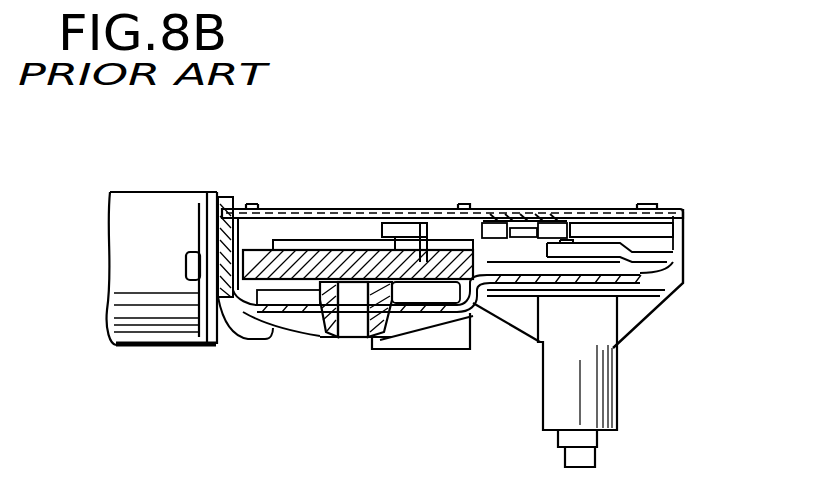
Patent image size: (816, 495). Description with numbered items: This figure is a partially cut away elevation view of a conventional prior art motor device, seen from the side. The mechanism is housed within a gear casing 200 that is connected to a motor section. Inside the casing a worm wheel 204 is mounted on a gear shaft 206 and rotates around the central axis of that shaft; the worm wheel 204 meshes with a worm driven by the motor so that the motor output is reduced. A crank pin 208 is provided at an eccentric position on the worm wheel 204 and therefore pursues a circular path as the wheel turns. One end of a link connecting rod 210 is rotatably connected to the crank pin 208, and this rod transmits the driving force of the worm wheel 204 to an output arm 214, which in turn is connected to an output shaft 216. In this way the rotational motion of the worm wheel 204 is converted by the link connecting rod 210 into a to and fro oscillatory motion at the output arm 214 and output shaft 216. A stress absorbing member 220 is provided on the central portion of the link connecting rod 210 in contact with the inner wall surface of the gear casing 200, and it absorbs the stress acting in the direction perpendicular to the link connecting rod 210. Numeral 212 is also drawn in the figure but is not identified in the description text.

The gear casing 200 is at (287, 209).
The worm wheel 204 is at (246, 249).
The gear shaft 206 is at (358, 328).
The crank pin 208 is at (413, 209).
The link connecting rod 210 is at (605, 209).
The right end block 212 is at (648, 209).
The output arm 214 is at (660, 245).
The output shaft 216 is at (548, 258).
The stress absorbing member 220 is at (507, 209).